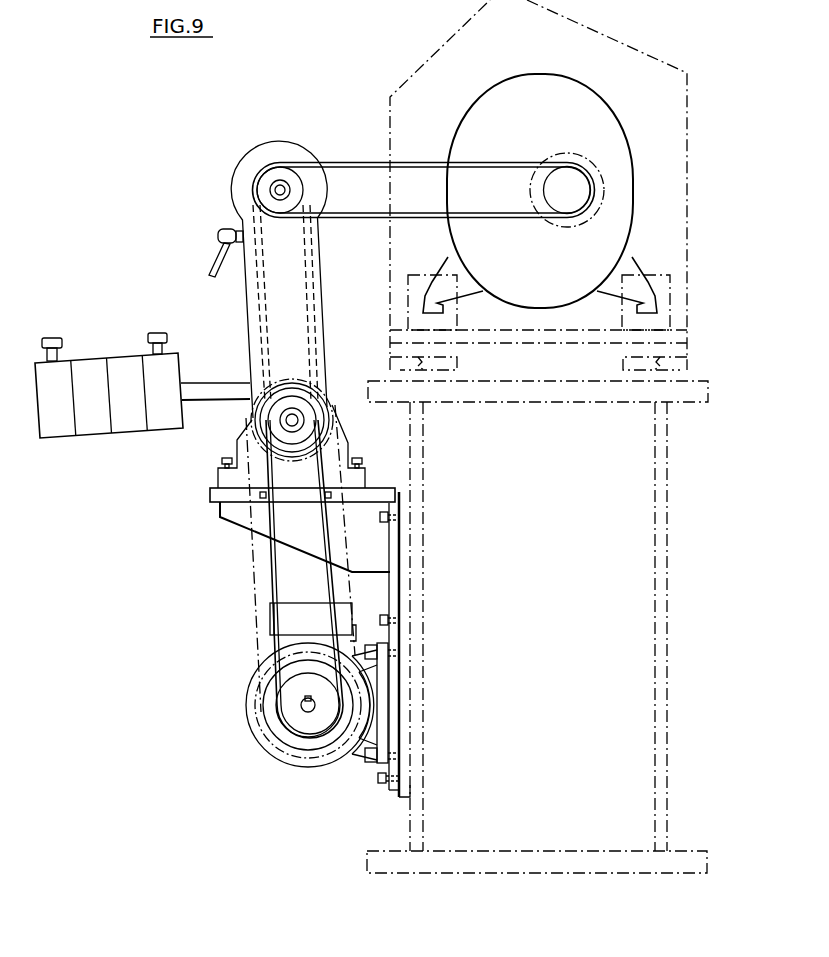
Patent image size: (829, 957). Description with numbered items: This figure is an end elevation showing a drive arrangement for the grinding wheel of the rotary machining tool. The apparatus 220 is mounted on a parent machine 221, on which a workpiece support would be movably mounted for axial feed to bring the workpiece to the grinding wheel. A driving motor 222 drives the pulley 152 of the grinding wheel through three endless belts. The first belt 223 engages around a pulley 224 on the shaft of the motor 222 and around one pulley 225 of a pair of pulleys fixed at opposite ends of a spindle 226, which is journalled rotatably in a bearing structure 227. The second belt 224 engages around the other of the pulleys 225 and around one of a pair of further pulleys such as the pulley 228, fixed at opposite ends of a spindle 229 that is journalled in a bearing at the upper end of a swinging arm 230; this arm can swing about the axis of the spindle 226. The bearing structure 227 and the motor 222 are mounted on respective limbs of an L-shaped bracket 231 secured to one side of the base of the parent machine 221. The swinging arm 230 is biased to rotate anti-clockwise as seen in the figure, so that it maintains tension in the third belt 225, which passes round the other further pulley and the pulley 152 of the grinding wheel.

The pulley 152 is at (567, 178).
The apparatus 220 is at (634, 208).
The parent machine 221 is at (668, 554).
The driving motor 222 is at (263, 746).
The endless belt 223 is at (271, 560).
The pulley / second belt 224 is at (309, 312).
The pulley / third belt 225 is at (373, 161).
The spindle 226 is at (298, 417).
The bearing structure 227 is at (329, 443).
The further pulley 228 is at (288, 176).
The spindle 229 is at (291, 188).
The swinging arm 230 is at (318, 266).
The L-shaped bracket 231 is at (375, 487).